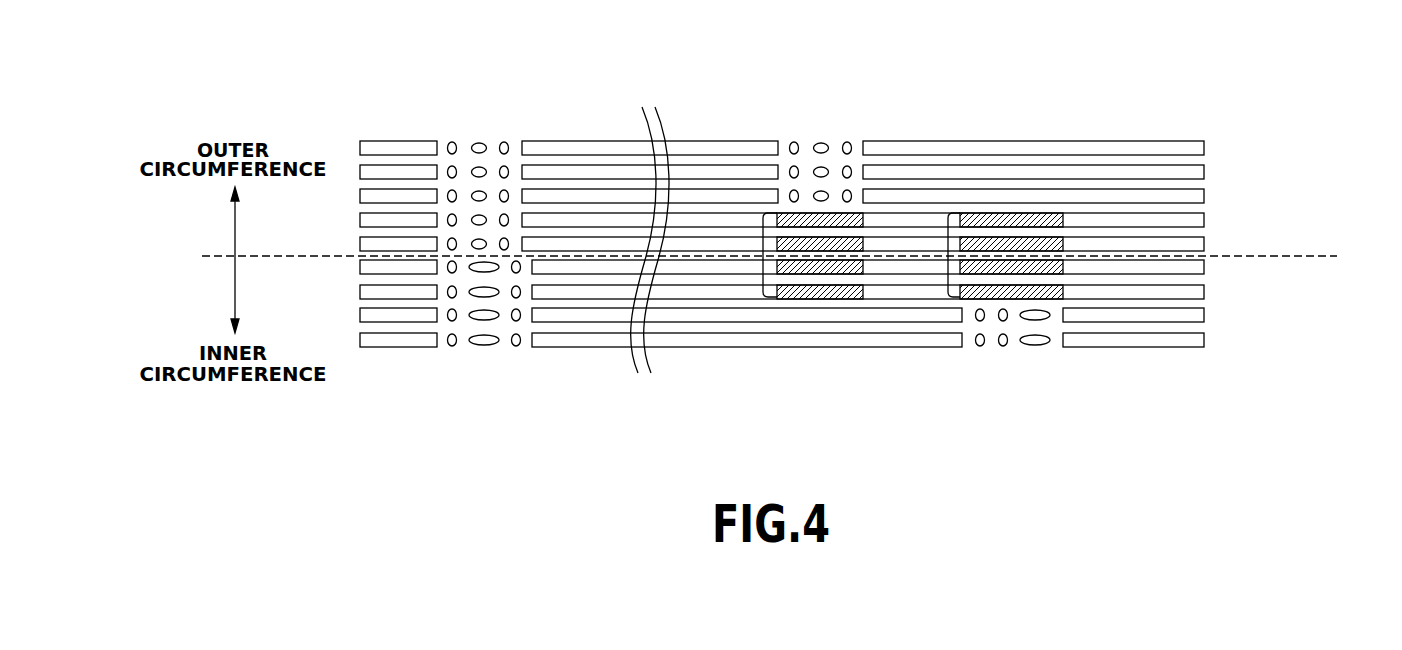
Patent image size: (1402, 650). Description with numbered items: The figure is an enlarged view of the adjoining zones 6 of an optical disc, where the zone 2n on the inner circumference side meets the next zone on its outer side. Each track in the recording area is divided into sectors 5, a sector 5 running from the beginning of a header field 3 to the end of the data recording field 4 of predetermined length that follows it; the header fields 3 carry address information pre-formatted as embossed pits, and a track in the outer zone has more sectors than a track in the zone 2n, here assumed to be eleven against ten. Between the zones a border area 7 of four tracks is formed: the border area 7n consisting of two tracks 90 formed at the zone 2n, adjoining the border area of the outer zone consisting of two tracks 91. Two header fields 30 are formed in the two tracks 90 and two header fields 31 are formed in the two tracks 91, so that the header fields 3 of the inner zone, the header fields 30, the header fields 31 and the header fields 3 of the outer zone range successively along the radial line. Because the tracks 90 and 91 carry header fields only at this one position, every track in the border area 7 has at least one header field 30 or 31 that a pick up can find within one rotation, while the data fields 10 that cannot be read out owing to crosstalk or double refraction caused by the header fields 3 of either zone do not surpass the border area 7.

The zone 2n is at (1323, 257).
The header field 3 is at (520, 134).
The header field 30 is at (521, 267).
The header field 31 is at (509, 243).
The data recording field 4 is at (1204, 129).
The sector 5 is at (1204, 86).
The adjoining zones 6 is at (679, 60).
The border area 7 is at (1282, 208).
The border area 7n is at (1206, 257).
The track 90 is at (359, 263).
The track 91 is at (359, 246).
The data field 10 is at (763, 256).